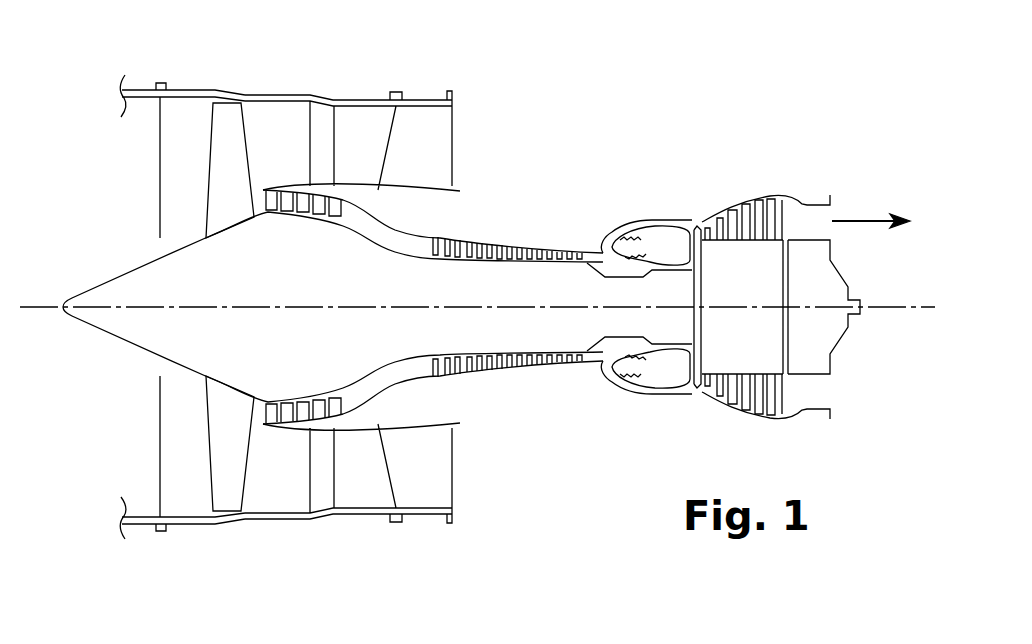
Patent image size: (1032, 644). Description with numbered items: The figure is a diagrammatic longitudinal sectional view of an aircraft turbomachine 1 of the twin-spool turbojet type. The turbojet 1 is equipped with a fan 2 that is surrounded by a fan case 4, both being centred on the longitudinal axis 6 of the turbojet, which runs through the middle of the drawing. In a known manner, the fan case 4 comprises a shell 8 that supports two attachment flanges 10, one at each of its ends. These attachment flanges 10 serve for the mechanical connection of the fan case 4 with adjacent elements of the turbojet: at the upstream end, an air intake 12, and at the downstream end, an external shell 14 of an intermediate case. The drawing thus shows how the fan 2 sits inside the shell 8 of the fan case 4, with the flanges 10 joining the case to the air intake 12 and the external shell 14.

The aircraft turbomachine 1 is at (81, 128).
The fan 2 is at (227, 127).
The fan case 4 is at (283, 94).
The longitudinal axis 6 is at (915, 308).
The shell 8 is at (193, 90).
The attachment flanges 10 is at (162, 83).
The air intake 12 is at (137, 525).
The external shell of an intermediate case 14 is at (415, 517).